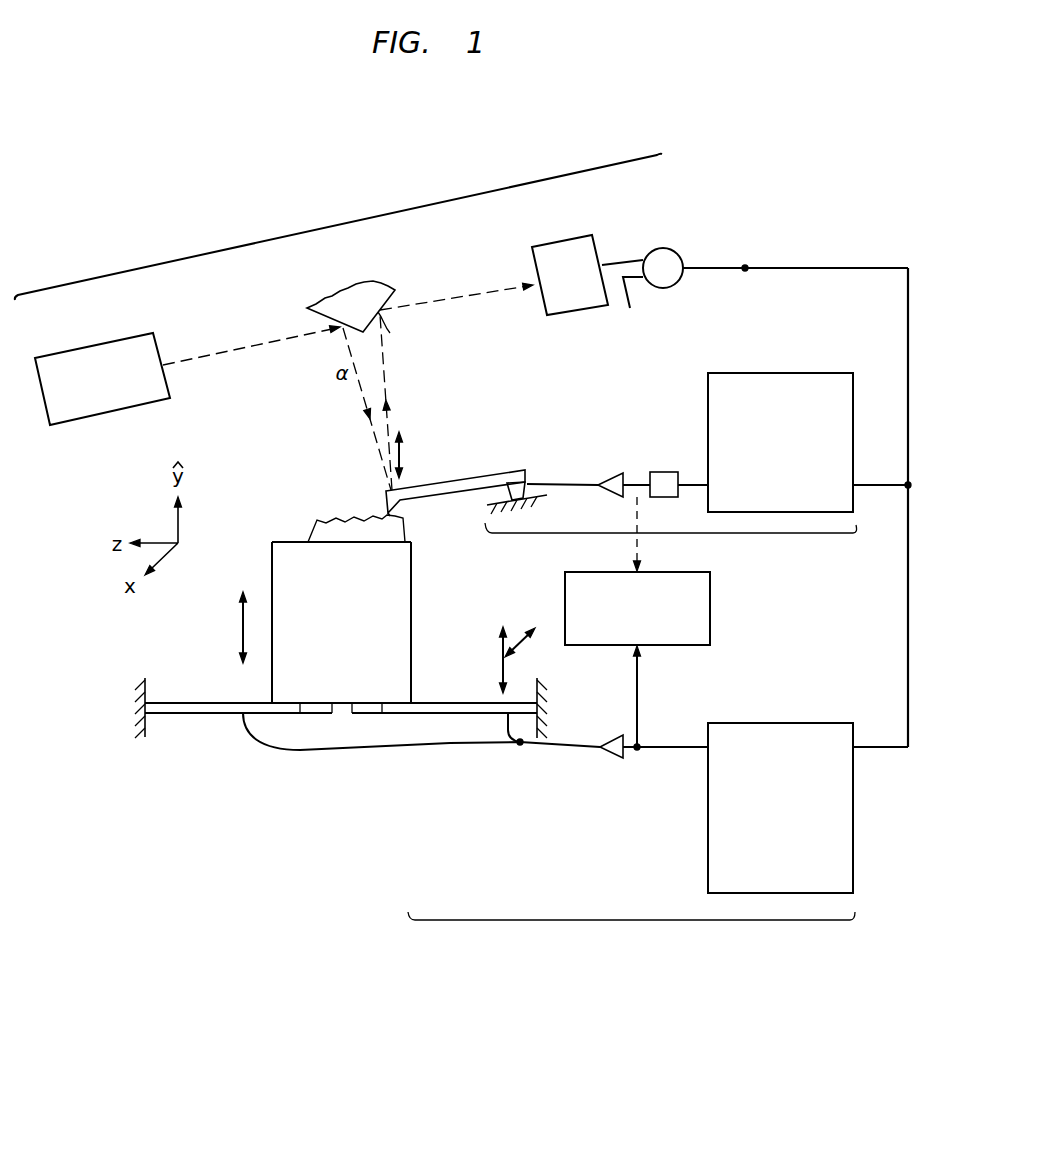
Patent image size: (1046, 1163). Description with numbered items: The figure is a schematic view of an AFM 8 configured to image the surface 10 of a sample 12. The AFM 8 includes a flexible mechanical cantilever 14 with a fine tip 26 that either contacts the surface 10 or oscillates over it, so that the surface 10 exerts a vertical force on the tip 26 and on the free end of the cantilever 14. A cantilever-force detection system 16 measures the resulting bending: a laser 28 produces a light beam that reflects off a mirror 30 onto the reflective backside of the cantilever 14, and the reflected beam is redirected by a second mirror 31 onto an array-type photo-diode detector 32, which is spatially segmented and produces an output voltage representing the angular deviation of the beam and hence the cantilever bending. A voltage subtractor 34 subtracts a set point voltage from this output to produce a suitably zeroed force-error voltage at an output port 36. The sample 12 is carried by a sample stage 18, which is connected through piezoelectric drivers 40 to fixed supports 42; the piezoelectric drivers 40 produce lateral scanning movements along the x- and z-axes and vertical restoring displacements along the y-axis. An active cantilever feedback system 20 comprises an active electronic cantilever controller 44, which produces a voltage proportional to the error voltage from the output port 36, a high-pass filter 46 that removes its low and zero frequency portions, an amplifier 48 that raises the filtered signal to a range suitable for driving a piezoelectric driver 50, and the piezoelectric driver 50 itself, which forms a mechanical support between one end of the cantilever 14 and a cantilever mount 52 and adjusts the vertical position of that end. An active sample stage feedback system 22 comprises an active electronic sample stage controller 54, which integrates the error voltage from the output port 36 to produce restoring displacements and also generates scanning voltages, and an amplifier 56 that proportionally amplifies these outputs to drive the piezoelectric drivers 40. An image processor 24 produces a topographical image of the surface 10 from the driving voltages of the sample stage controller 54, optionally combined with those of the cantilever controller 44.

The AFM 8 is at (231, 796).
The surface 10 is at (315, 523).
The sample 12 is at (353, 537).
The flexible mechanical cantilever 14 is at (467, 477).
The cantilever-force detection system 16 is at (302, 235).
The sample stage 18 is at (330, 643).
The active cantilever feedback system 20 is at (665, 532).
The active sample stage feedback system 22 is at (648, 921).
The image processor 24 is at (562, 580).
The fine tip 26 is at (383, 508).
The laser 28 is at (88, 395).
The mirror 30 is at (325, 325).
The mirror 31 is at (400, 331).
The array-type photo-diode detector 32 is at (558, 287).
The voltage subtractor 34 is at (680, 247).
The output port 36 is at (747, 267).
The piezoelectric drivers 40 is at (215, 713).
The fixed supports 42 is at (130, 723).
The active electronic cantilever controller 44 is at (707, 387).
The high-pass filter 46 is at (662, 470).
The amplifier 48 is at (612, 468).
The piezoelectric driver 50 is at (530, 470).
The cantilever mount 52 is at (490, 517).
The active electronic sample stage controller 54 is at (707, 733).
The amplifier 56 is at (610, 753).